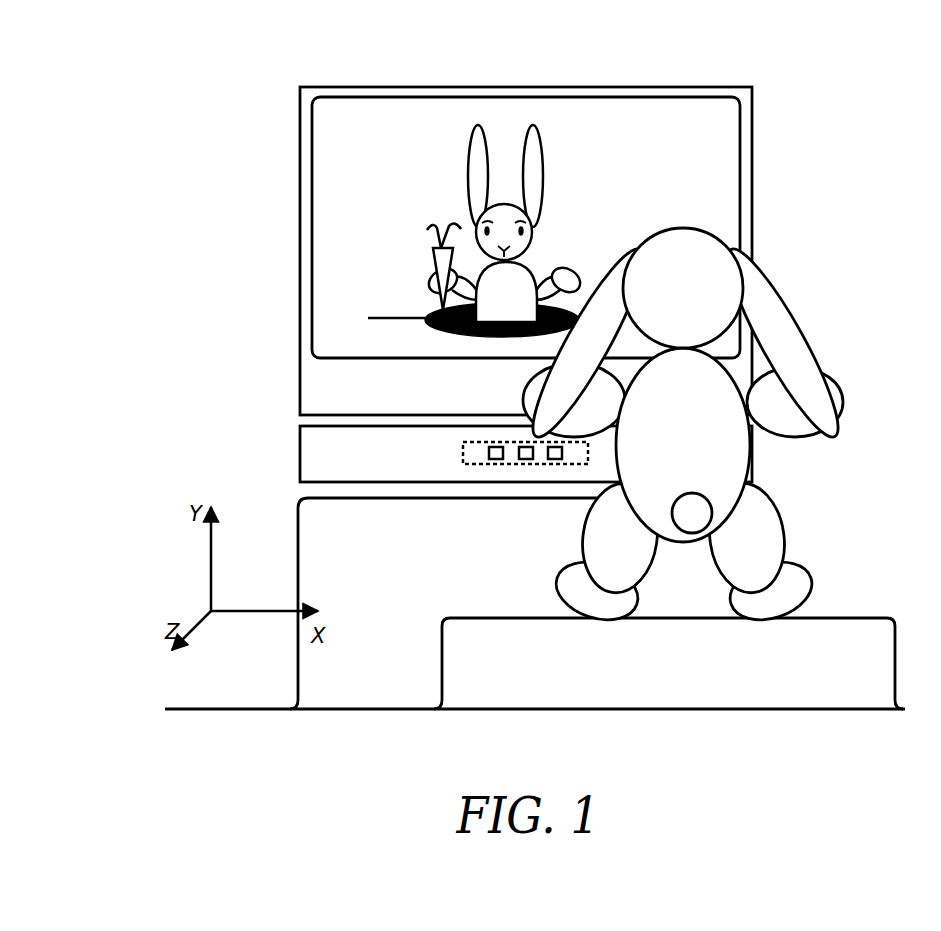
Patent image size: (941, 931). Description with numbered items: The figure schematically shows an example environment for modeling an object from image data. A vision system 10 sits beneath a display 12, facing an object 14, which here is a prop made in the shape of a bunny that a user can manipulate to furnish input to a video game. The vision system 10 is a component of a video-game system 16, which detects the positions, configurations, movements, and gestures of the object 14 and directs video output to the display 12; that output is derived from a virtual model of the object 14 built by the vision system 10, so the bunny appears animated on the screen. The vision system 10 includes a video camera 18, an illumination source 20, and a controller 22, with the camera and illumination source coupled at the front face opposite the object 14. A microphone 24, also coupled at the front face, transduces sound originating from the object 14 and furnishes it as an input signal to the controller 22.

The vision system 10 is at (300, 453).
The display 12 is at (525, 87).
The object 14 is at (876, 440).
The video-game system 16 is at (207, 402).
The video camera 18 is at (497, 461).
The illumination source 20 is at (526, 461).
The controller 22 is at (463, 453).
The microphone 24 is at (556, 461).